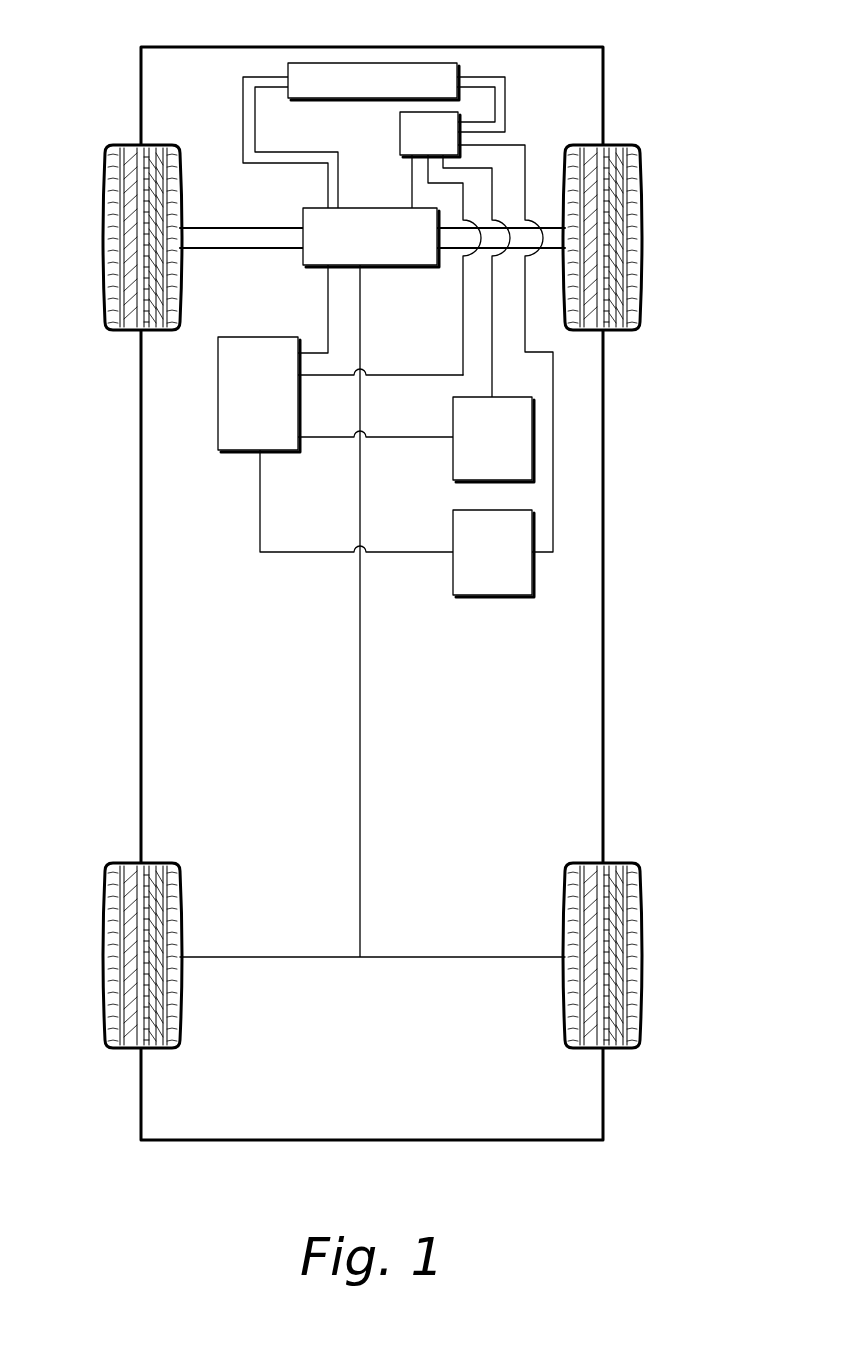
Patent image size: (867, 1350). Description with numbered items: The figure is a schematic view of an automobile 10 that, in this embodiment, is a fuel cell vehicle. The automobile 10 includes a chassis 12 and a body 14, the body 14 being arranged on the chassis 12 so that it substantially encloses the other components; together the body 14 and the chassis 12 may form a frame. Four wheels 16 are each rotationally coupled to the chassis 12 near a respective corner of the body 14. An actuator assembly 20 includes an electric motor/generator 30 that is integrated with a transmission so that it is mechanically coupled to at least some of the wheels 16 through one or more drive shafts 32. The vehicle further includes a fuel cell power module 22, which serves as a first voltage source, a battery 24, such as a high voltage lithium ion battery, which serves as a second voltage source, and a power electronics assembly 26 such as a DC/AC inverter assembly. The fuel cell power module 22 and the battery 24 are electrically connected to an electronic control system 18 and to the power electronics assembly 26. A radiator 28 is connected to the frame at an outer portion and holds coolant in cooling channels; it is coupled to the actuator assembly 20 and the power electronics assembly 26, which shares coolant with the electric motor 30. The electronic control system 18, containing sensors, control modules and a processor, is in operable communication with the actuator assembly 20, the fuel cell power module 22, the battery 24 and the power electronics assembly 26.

The automobile 10 is at (642, 51).
The chassis 12 is at (362, 802).
The body 14 is at (140, 441).
The wheels 16 is at (112, 218).
The electronic control system 18 is at (259, 394).
The actuator assembly 20 is at (396, 287).
The fuel cell power module 22 is at (493, 439).
The battery 24 is at (493, 553).
The power electronics assembly 26 is at (430, 134).
The radiator 28 is at (335, 75).
The electric motor/generator 30 is at (371, 237).
The drive shafts 32 is at (207, 237).